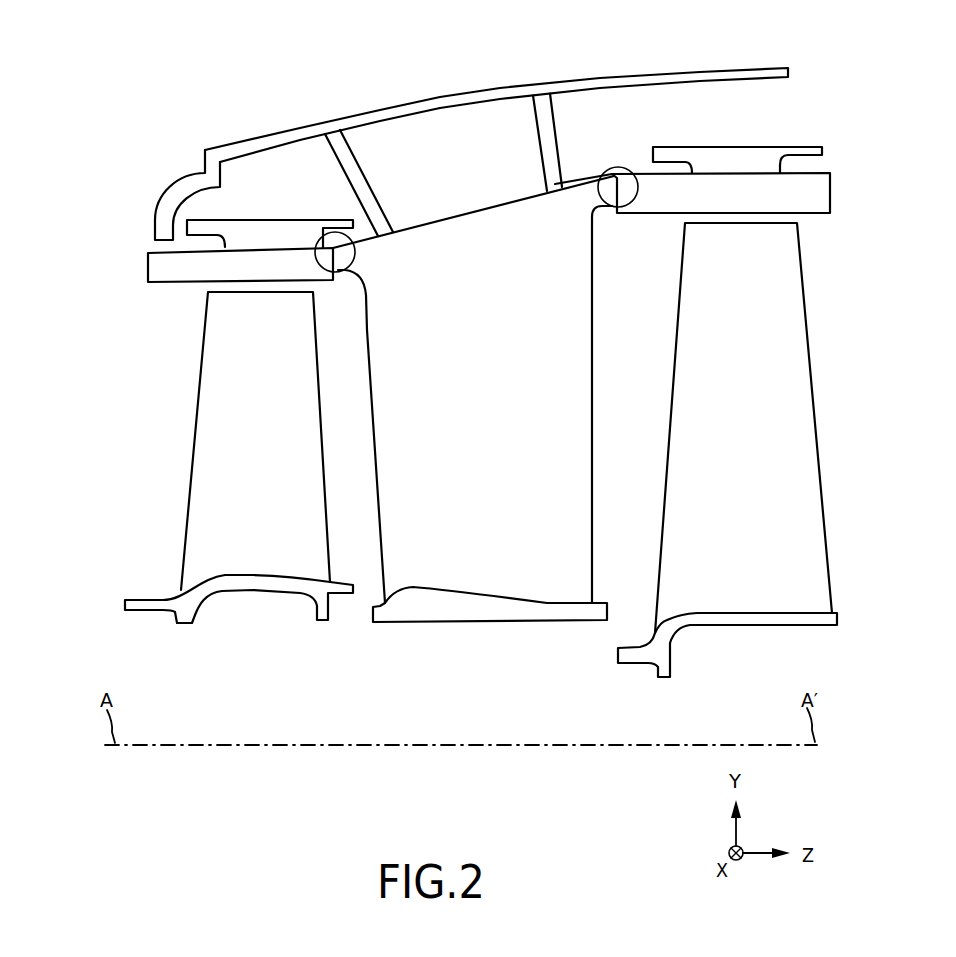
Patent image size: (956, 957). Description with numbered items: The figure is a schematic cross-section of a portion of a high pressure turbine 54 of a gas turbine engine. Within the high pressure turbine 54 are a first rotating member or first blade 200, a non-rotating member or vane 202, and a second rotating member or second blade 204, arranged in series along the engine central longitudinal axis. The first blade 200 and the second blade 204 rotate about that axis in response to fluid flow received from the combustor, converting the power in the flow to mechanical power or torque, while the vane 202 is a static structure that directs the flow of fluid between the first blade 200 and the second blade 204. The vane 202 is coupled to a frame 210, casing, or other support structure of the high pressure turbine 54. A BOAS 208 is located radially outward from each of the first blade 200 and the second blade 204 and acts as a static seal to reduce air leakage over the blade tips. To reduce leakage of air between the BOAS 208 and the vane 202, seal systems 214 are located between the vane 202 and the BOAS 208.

The high pressure turbine 54 is at (136, 107).
The first blade 200 is at (270, 401).
The vane 202 is at (496, 401).
The second blade 204 is at (754, 390).
The BOAS 208 is at (172, 268).
The frame 210 is at (465, 98).
The seal system 214 is at (322, 235).